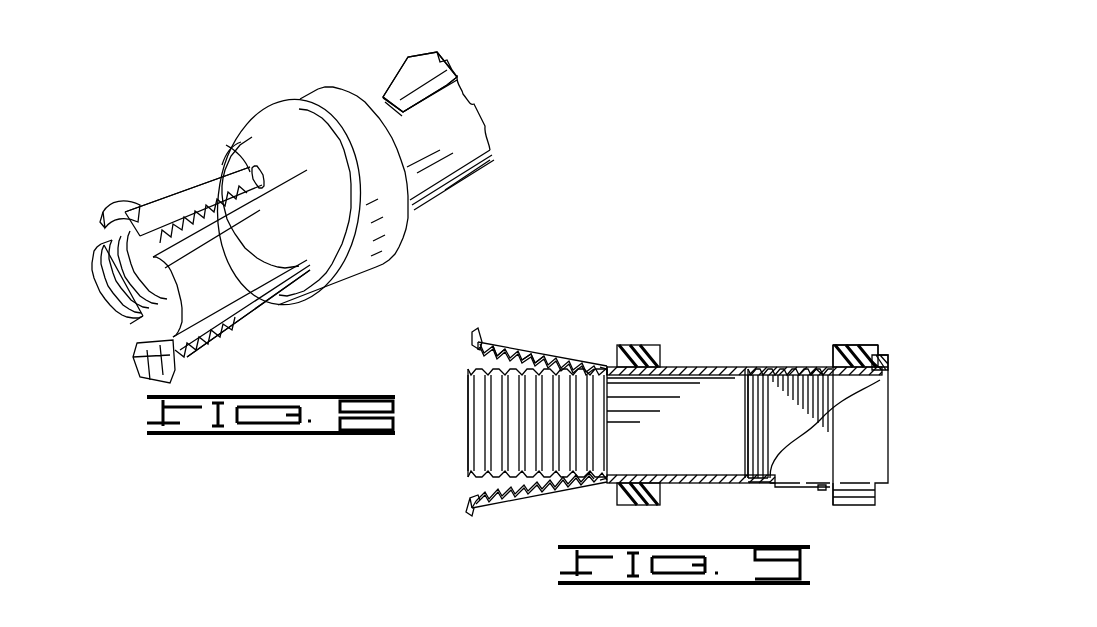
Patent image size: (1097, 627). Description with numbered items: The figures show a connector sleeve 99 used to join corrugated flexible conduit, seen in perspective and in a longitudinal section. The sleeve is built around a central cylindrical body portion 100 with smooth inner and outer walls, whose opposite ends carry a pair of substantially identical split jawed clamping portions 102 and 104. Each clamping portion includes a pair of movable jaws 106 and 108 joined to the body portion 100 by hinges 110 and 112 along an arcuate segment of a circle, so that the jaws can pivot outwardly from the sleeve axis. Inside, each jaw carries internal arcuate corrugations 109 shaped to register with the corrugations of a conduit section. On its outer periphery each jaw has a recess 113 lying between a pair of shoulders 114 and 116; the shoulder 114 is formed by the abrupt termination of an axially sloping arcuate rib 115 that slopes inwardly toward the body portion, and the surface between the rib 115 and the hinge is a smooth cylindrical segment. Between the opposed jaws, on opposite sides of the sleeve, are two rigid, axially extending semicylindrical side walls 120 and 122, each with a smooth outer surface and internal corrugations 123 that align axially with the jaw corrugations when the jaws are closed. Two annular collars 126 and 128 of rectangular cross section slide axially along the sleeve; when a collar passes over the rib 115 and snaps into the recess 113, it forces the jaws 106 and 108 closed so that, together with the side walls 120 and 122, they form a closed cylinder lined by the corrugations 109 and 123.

In FIG. 8, the connector sleeve 99 is at (452, 186).
In FIG. 8, the central cylindrical body portion 100 is at (244, 168).
In FIG. 9, the central cylindrical body portion 100 is at (680, 368).
In FIG. 8, the split jawed clamping portion 102 is at (231, 328).
In FIG. 9, the split jawed clamping portion 102 is at (507, 341).
In FIG. 8, the split jawed clamping portion 104 is at (406, 64).
In FIG. 9, the split jawed clamping portion 104 is at (783, 360).
In FIG. 8, the movable jaw 106 is at (105, 219).
In FIG. 9, the movable jaw 106 is at (474, 334).
In FIG. 8, the movable jaw 108 is at (150, 369).
In FIG. 9, the movable jaw 108 is at (472, 513).
In FIG. 9, the internal arcuate corrugations 109 is at (476, 345).
In FIG. 8, the hinge 110 is at (231, 147).
In FIG. 9, the hinge 110 is at (607, 366).
In FIG. 8, the hinge 112 is at (378, 98).
In FIG. 9, the hinge 112 is at (600, 489).
In FIG. 8, the recess 113 is at (140, 206).
In FIG. 9, the recess 113 is at (497, 338).
In FIG. 8, the shoulder 114 is at (163, 203).
In FIG. 9, the shoulder 114 is at (530, 345).
In FIG. 8, the arcuate rib 115 is at (194, 183).
In FIG. 9, the arcuate rib 115 is at (533, 350).
In FIG. 8, the shoulder 116 is at (137, 208).
In FIG. 9, the shoulder 116 is at (478, 339).
In FIG. 8, the semicylindrical side wall 120 is at (100, 263).
In FIG. 9, the semicylindrical side wall 120 is at (884, 421).
In FIG. 8, the semicylindrical side wall 122 is at (214, 257).
In FIG. 8, the internal corrugations 123 is at (126, 279).
In FIG. 9, the internal corrugations 123 is at (512, 415).
In FIG. 8, the annular collar 126 is at (314, 169).
In FIG. 9, the annular collar 126 is at (660, 345).
In FIG. 8, the annular collar 128 is at (366, 139).
In FIG. 9, the annular collar 128 is at (850, 343).